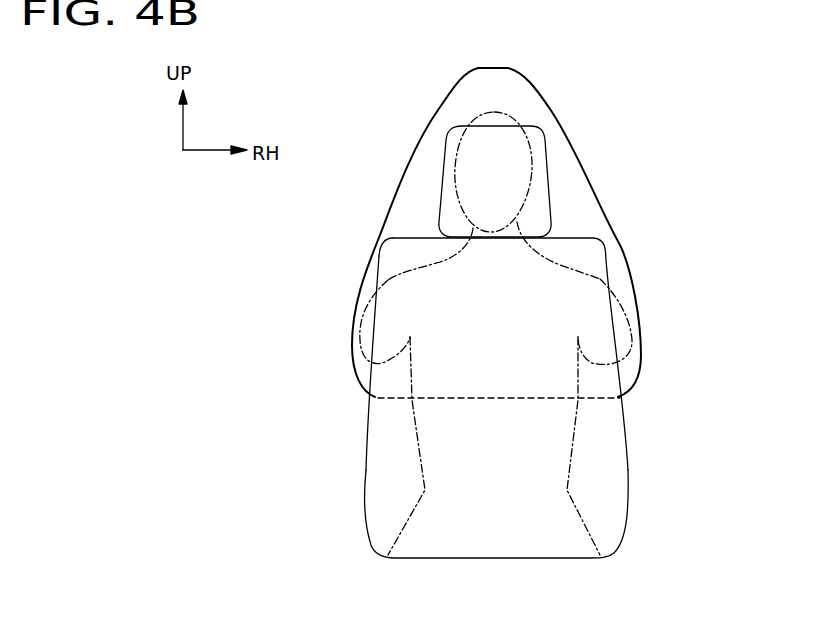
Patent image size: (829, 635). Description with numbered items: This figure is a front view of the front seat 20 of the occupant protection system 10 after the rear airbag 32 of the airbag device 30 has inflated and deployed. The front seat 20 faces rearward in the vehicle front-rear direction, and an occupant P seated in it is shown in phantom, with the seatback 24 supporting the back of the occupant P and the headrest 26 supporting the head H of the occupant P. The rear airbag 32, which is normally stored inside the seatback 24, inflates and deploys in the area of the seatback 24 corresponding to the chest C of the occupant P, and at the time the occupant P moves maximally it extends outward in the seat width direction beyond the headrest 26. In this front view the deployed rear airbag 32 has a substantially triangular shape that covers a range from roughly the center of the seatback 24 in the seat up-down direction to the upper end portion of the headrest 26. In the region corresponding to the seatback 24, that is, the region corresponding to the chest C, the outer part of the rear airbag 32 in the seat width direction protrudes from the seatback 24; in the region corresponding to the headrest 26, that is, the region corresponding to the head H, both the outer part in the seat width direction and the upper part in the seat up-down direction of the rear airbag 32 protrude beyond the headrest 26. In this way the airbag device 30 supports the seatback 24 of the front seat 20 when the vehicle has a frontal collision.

The occupant protection system 10 is at (692, 130).
The front seat 20 is at (605, 252).
The seatback 24 is at (605, 438).
The headrest 26 is at (545, 172).
The airbag device 30 is at (515, 232).
The rear airbag 32 is at (597, 203).
The occupant P is at (478, 108).
The head H is at (463, 155).
The chest C is at (447, 280).